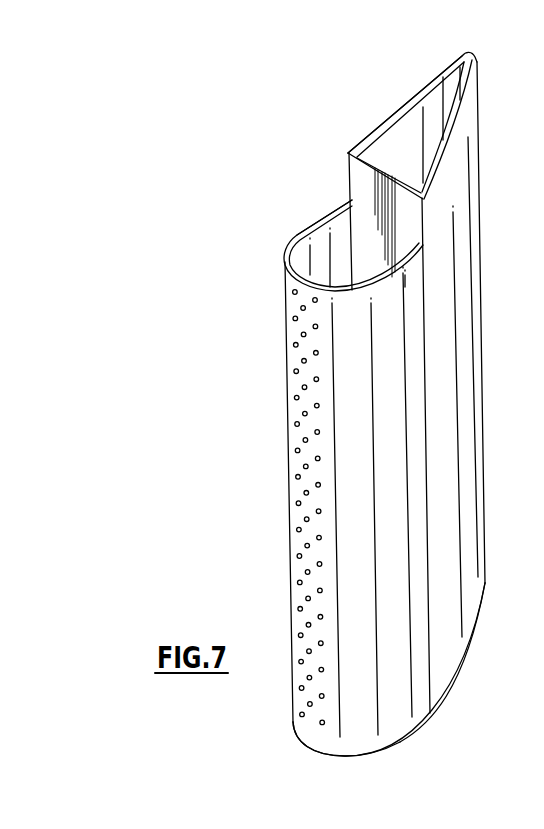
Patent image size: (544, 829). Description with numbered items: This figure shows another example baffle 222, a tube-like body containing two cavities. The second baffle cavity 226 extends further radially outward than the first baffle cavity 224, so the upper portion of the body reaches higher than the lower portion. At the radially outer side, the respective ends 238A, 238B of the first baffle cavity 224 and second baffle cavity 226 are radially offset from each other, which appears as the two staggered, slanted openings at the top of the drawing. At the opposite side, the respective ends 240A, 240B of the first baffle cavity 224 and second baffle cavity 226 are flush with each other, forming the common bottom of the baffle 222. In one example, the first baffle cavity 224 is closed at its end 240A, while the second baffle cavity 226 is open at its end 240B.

The baffle 222 is at (304, 127).
The first baffle cavity 224 is at (318, 248).
The second baffle cavity 226 is at (412, 135).
The end of first baffle cavity 238A is at (308, 201).
The end of second baffle cavity 238B is at (436, 63).
The end of first baffle cavity 240A is at (382, 771).
The end of second baffle cavity 240B is at (468, 677).